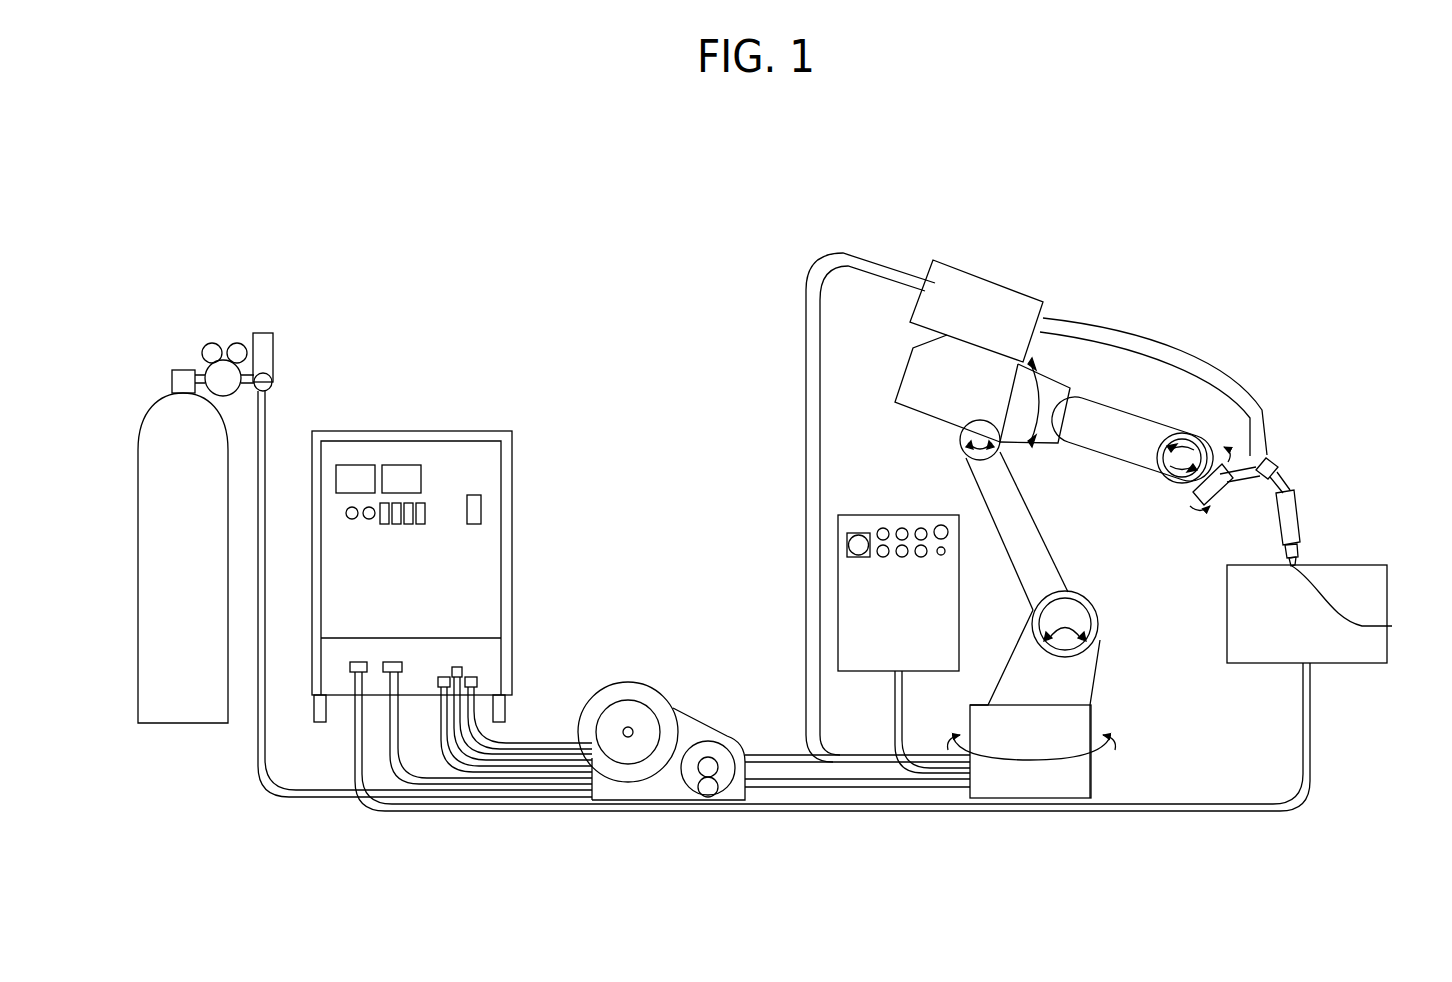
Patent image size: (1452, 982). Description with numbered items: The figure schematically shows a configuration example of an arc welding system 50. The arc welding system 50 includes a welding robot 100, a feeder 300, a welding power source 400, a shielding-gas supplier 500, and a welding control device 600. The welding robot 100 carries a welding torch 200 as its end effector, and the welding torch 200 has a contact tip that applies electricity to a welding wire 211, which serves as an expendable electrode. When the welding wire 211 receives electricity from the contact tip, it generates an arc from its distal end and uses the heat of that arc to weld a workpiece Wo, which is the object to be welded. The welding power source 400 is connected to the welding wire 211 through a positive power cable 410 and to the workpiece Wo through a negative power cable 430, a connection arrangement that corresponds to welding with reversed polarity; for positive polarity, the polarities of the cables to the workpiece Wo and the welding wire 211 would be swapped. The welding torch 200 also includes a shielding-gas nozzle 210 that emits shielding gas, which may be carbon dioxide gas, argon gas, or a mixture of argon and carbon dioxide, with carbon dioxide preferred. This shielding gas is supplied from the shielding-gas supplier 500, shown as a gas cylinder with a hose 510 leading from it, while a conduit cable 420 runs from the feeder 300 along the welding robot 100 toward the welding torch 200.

The arc welding system 50 is at (1214, 182).
The welding robot 100 is at (1100, 379).
The welding torch 200 is at (1303, 510).
The shielding-gas nozzle 210 is at (1300, 553).
The welding wire 211 is at (1366, 605).
The feeder 300 is at (699, 689).
The welding power source 400 is at (530, 419).
The positive power cable 410 is at (418, 786).
The conduit cable 420 is at (806, 347).
The negative power cable 430 is at (470, 818).
The shielding-gas supplier 500 is at (150, 384).
The gas hose 510 is at (266, 407).
The welding control device 600 is at (889, 511).
The workpiece Wo is at (1226, 610).